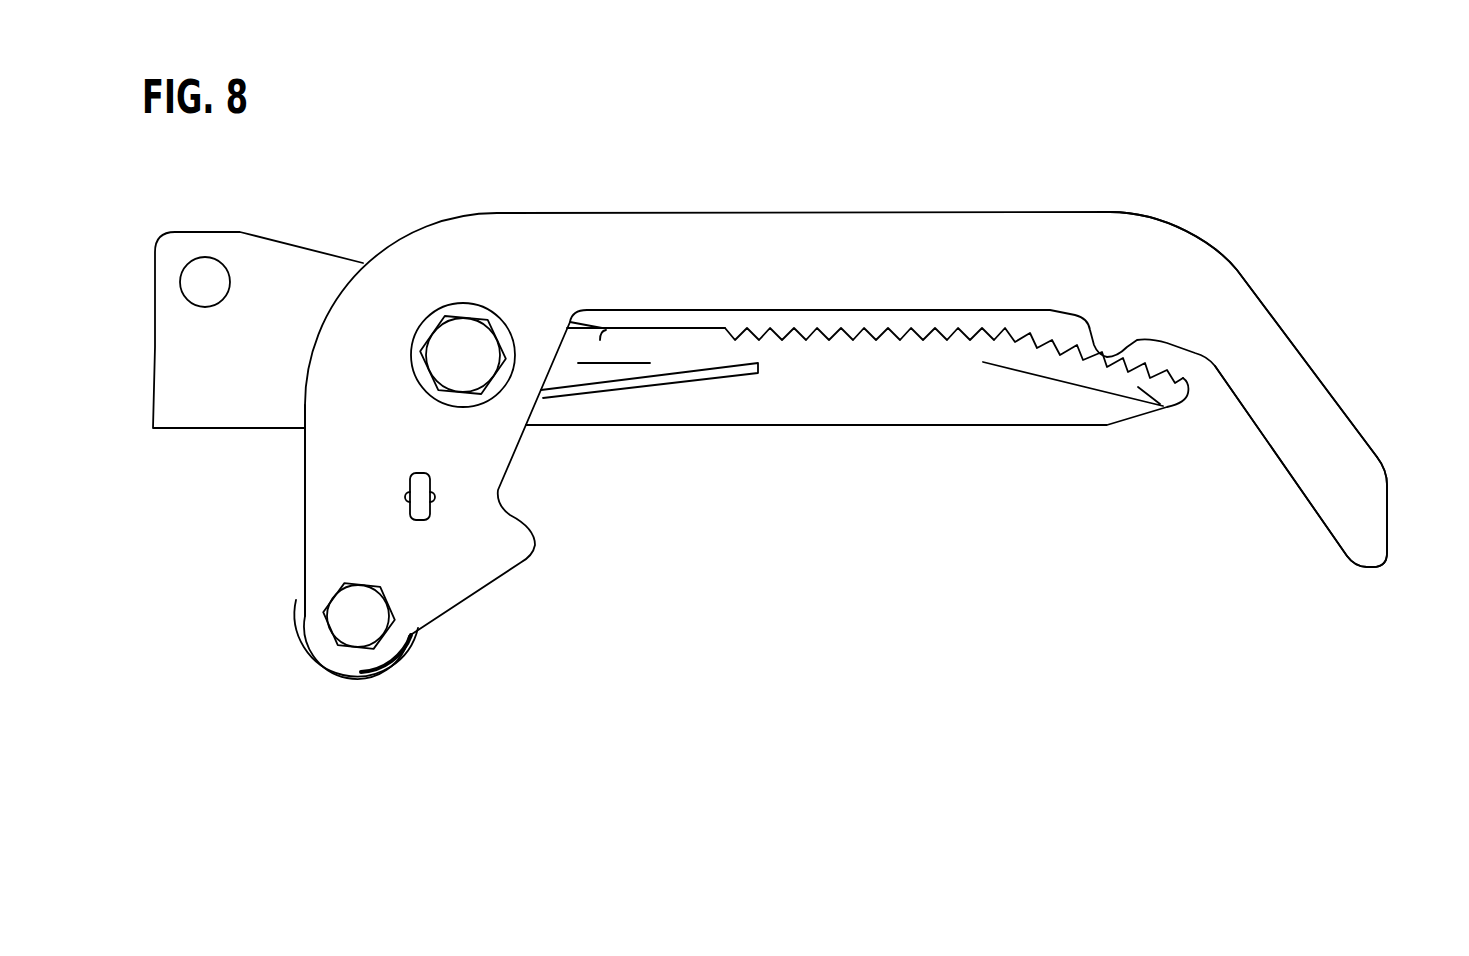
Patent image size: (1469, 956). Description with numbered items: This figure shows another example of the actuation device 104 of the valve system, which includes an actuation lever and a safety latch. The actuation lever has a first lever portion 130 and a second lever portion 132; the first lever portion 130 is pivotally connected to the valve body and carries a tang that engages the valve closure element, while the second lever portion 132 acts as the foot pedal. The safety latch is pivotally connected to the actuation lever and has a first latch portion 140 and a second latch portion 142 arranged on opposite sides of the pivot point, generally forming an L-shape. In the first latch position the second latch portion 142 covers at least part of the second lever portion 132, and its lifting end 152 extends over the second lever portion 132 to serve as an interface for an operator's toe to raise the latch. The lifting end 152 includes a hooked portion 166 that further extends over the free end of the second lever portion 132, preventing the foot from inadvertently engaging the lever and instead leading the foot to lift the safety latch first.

The actuation device 104 is at (411, 161).
The first lever portion 130 is at (283, 268).
The second lever portion 132 is at (822, 347).
The first latch portion 140 is at (330, 471).
The second latch portion 142 is at (947, 238).
The lifting end 152 is at (1218, 285).
The hooked portion 166 is at (1342, 438).